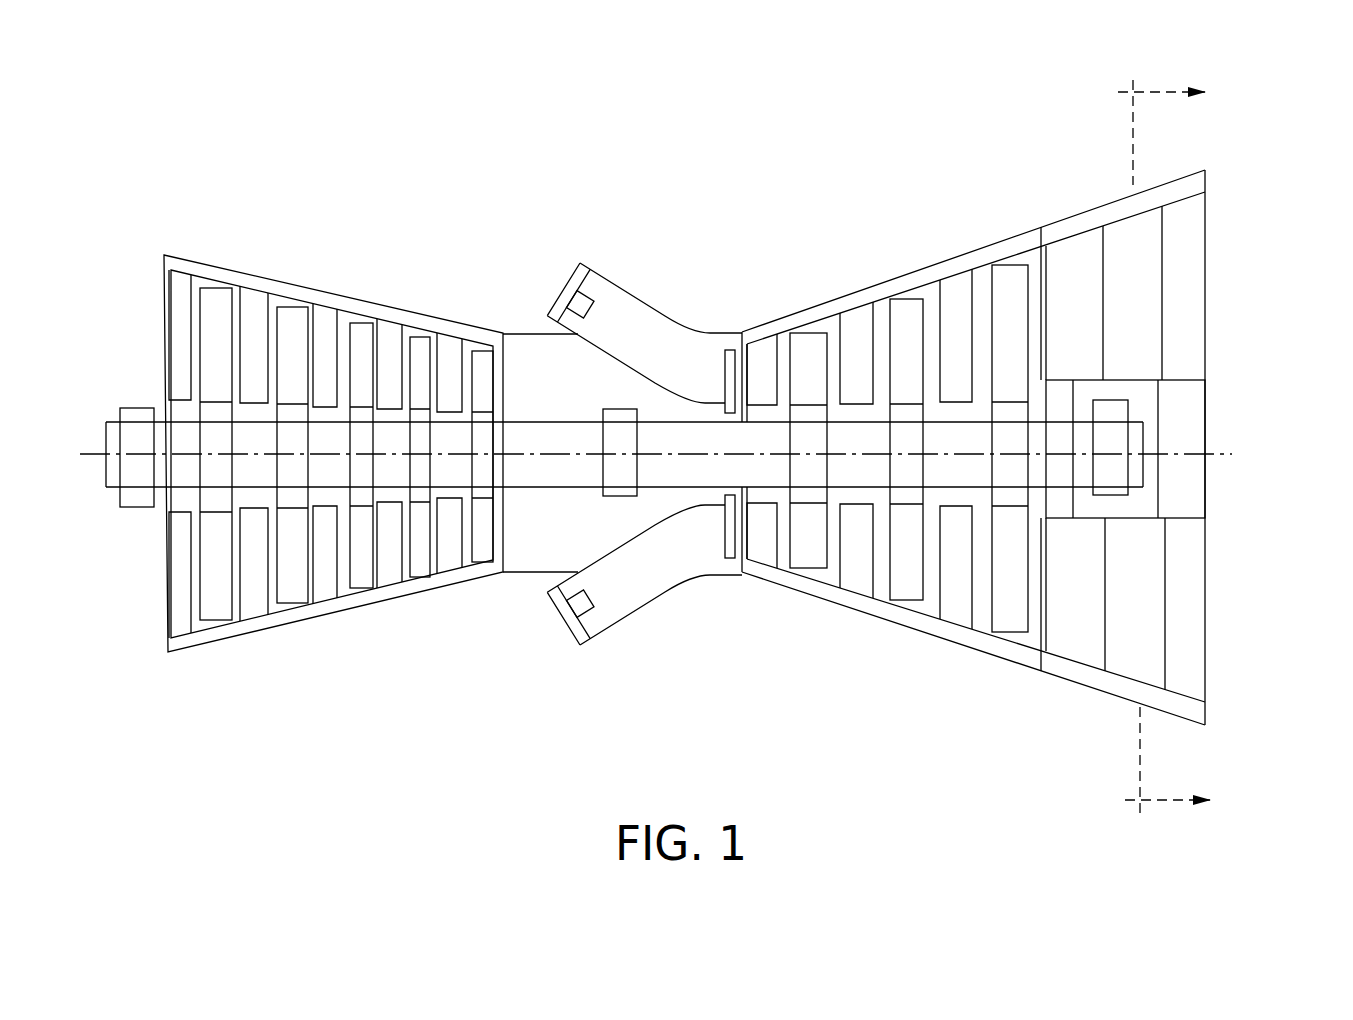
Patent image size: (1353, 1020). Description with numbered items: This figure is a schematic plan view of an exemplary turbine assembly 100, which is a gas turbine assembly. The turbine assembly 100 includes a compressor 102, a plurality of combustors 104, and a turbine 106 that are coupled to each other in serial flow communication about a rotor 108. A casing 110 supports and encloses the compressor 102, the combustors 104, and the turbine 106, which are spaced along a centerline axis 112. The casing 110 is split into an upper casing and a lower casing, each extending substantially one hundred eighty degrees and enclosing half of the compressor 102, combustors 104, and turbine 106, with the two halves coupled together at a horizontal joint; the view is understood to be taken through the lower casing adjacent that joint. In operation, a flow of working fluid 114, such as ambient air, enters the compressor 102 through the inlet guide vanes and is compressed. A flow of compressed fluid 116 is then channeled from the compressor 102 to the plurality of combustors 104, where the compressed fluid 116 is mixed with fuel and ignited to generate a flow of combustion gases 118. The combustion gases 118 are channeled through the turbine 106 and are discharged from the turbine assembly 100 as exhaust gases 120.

The turbine assembly 100 is at (222, 142).
The compressor 102 is at (352, 258).
The combustors 104 is at (648, 277).
The turbine 106 is at (937, 242).
The rotor 108 is at (1197, 153).
The casing 110 is at (340, 613).
The centerline axis 112 is at (1223, 447).
The working fluid 114 is at (215, 305).
The compressed fluid 116 is at (252, 307).
The combustion gases 118 is at (808, 340).
The exhaust gases 120 is at (858, 330).